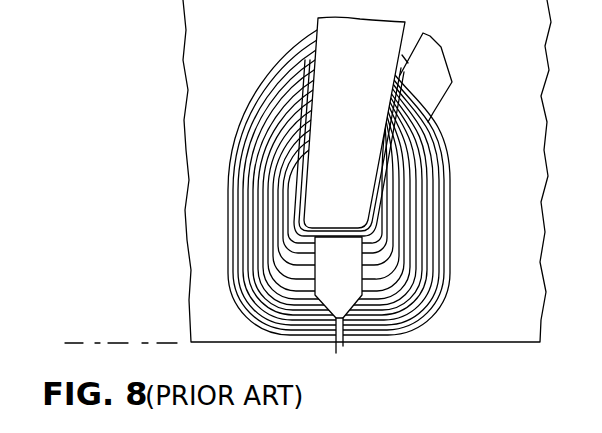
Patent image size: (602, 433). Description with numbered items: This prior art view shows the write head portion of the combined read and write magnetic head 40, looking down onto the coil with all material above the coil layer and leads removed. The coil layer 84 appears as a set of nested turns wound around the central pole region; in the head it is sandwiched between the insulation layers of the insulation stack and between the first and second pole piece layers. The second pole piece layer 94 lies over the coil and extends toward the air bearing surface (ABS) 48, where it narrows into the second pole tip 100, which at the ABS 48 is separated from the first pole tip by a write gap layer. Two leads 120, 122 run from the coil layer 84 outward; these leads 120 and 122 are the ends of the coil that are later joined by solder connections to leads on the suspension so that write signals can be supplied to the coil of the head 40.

The magnetic head 40 is at (458, 157).
The coil layer 84 is at (433, 237).
The lead 120 is at (362, 118).
The second pole piece layer 94 is at (351, 279).
The second pole tip 100 is at (334, 349).
The lead 122 is at (440, 47).
The air bearing surface (ABS) 48 is at (124, 312).